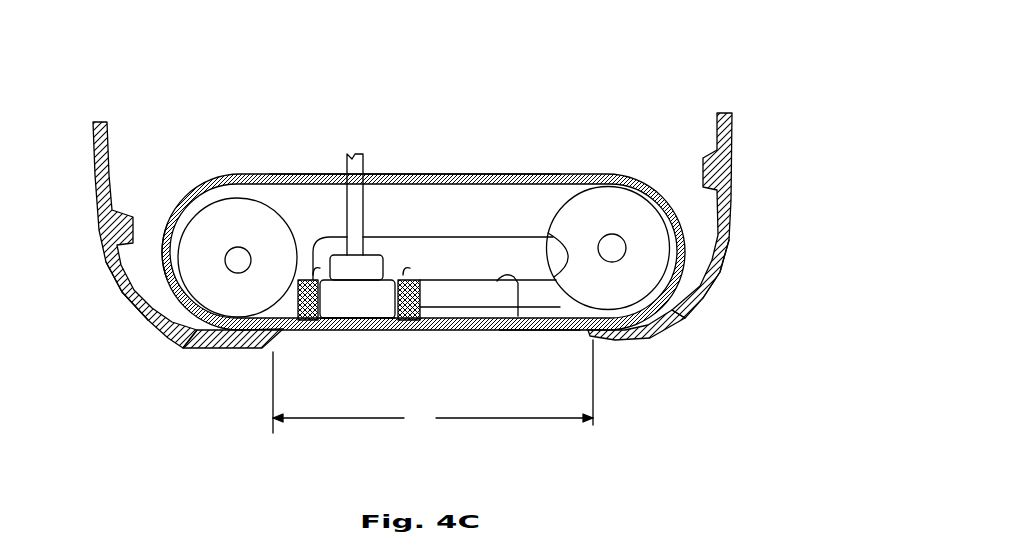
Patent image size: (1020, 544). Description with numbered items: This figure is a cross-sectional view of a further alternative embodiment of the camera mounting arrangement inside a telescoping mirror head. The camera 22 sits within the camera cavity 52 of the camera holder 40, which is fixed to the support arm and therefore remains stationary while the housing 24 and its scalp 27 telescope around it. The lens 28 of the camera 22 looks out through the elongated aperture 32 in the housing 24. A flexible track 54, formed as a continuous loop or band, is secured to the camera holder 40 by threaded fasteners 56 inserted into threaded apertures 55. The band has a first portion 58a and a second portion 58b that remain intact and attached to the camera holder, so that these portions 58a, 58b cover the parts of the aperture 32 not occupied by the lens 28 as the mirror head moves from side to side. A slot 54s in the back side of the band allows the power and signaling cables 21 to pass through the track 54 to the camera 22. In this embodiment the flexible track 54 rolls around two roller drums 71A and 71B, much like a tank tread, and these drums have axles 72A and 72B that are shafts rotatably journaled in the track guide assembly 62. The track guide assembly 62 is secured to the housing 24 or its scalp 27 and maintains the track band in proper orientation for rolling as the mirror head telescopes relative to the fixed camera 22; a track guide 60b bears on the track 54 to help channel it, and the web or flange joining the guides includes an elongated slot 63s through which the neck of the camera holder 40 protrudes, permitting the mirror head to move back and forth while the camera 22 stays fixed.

The cables 21 is at (350, 171).
The camera 22 is at (358, 300).
The housing 24 is at (96, 187).
The scalp 27 is at (133, 297).
The lens 28 is at (375, 332).
The aperture 32 is at (433, 386).
The camera holder 40 is at (425, 280).
The camera cavity 52 is at (420, 292).
The flexible track 54 is at (233, 182).
The slot 54s is at (522, 173).
The threaded apertures 55 is at (197, 333).
The threaded fasteners 56 is at (302, 322).
The first portion 58a is at (163, 232).
The second portion 58b is at (543, 323).
The track guide 60b is at (620, 342).
The track guide assembly 62 is at (429, 222).
The elongated slot 63s is at (518, 316).
The roller drum 71A is at (265, 205).
The roller drum 71B is at (587, 195).
The axle 72A is at (232, 252).
The axle 72B is at (614, 246).